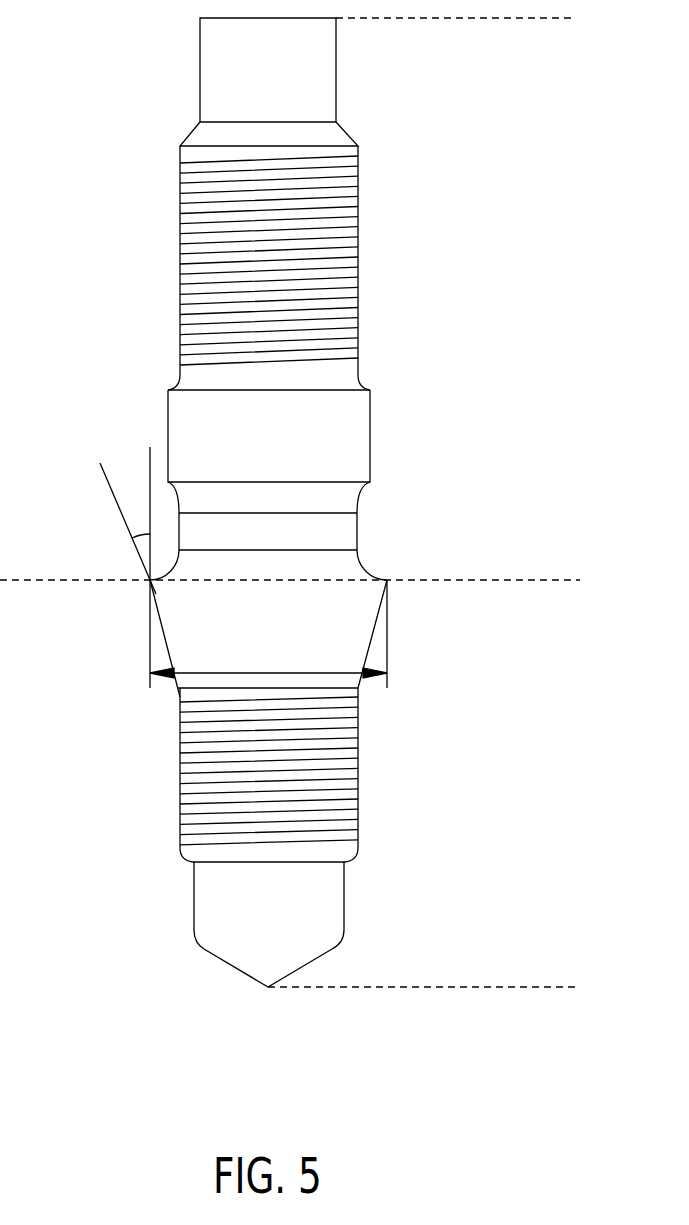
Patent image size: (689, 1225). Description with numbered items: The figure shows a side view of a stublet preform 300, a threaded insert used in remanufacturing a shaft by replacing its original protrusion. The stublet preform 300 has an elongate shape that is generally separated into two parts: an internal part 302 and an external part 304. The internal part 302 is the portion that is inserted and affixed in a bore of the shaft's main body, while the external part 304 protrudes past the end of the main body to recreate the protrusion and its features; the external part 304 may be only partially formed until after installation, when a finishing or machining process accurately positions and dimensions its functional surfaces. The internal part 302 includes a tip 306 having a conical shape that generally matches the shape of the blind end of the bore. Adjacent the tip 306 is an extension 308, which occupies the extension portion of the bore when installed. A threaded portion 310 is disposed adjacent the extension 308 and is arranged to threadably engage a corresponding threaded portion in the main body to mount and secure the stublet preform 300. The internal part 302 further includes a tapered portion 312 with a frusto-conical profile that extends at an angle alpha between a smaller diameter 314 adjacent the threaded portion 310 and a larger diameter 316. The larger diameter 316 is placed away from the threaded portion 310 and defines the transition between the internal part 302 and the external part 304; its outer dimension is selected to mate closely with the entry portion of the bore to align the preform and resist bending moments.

The stublet preform 300 is at (138, 108).
The internal part 302 is at (396, 811).
The external part 304 is at (575, 18).
The tip 306 is at (268, 968).
The extension 308 is at (333, 910).
The threaded portion 310 is at (352, 775).
The tapered portion 312 is at (368, 612).
The smaller diameter 314 is at (179, 690).
The larger diameter 316 is at (150, 582).